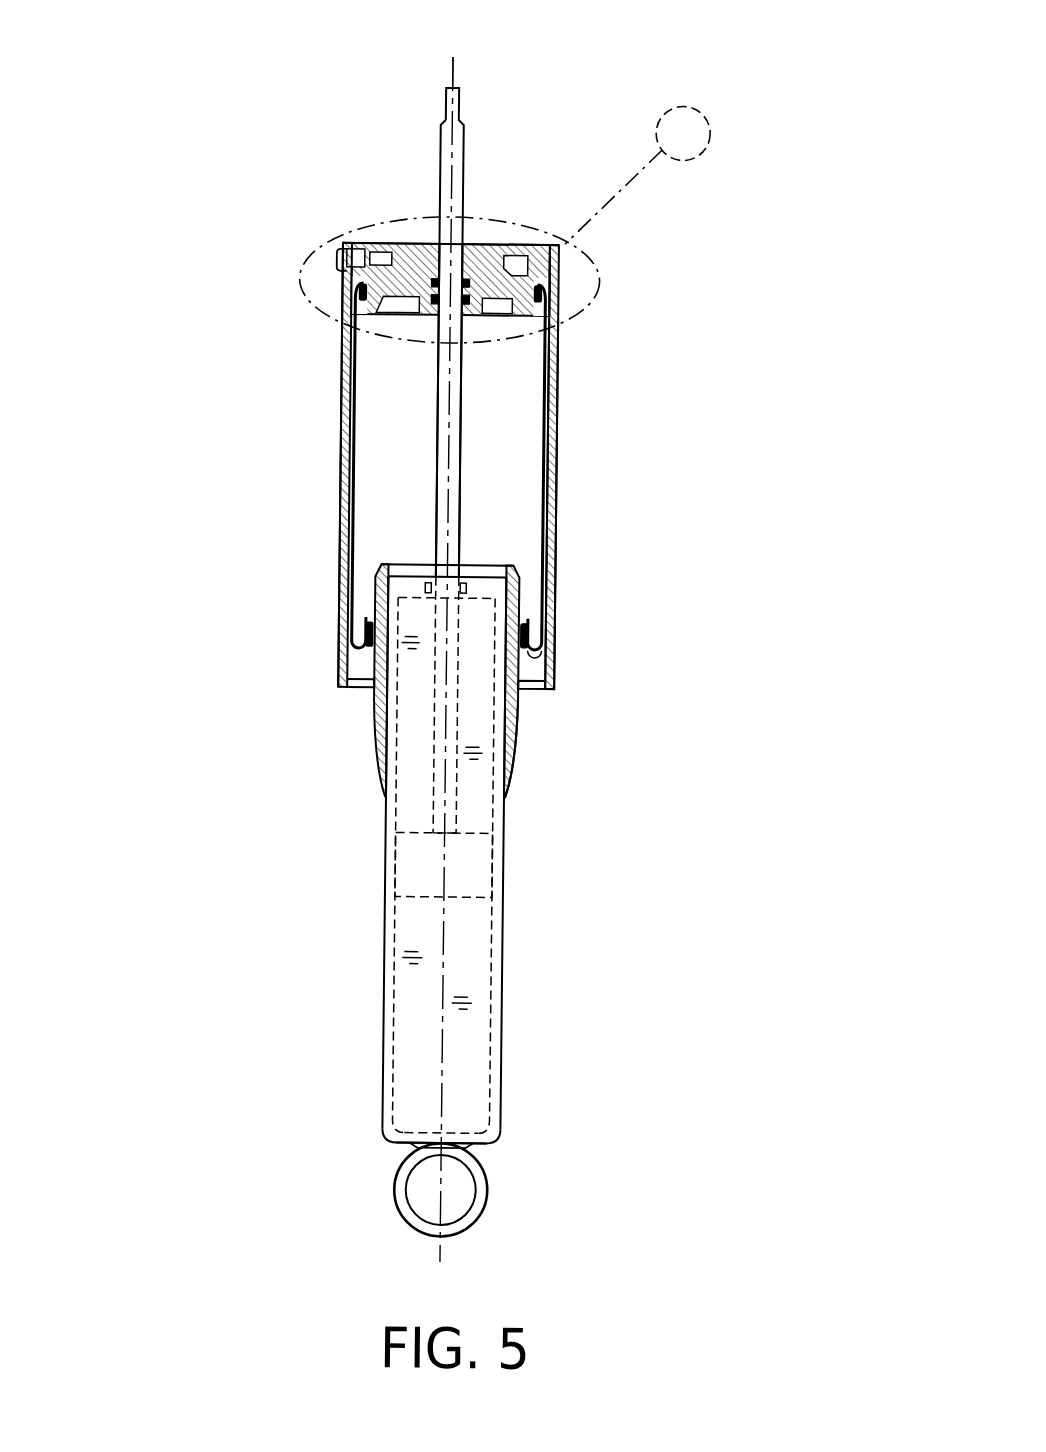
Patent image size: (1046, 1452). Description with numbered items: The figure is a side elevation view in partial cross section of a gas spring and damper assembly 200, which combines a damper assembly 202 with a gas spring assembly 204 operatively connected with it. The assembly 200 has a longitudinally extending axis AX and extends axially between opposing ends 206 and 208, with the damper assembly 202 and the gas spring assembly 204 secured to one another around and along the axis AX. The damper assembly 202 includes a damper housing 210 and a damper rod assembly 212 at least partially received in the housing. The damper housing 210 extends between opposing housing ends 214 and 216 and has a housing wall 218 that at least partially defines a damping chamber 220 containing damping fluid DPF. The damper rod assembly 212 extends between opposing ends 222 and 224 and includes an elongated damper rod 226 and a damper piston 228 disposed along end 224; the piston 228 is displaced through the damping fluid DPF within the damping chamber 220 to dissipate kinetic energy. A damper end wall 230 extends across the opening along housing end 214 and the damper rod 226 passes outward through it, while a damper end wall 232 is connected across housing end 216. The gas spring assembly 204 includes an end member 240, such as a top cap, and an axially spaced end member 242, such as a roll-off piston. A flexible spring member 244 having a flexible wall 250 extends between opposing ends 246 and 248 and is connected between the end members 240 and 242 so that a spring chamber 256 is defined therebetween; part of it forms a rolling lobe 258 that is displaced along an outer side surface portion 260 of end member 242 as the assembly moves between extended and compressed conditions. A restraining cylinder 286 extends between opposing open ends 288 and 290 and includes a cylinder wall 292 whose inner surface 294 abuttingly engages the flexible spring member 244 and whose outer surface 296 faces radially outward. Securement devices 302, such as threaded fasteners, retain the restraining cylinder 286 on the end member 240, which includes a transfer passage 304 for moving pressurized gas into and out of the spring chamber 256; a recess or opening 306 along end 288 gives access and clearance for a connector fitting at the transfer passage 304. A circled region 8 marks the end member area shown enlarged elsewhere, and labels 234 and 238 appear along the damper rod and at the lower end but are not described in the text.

The gas spring and damper assembly 200 is at (456, 673).
The damper assembly 202 is at (308, 984).
The gas spring assembly 204 is at (183, 471).
The end 206 is at (671, 303).
The end 208 is at (553, 1132).
The damper housing 210 is at (511, 997).
The damper rod assembly 212 is at (412, 532).
The housing end 214 is at (296, 608).
The housing end 216 is at (353, 1094).
The housing wall 218 is at (503, 1077).
The damping chamber 220 is at (402, 927).
The end 222 is at (488, 98).
The end 224 is at (430, 815).
The elongated damper rod 226 is at (464, 418).
The damper piston 228 is at (482, 871).
The damper end wall 230 is at (483, 592).
The damper end wall 232 is at (422, 1144).
The rod 234 is at (441, 161).
The eye mount 238 is at (433, 1237).
The end member 240 is at (393, 240).
The end member 242 is at (384, 733).
The flexible spring member 244 is at (350, 446).
The end 246 is at (367, 341).
The end 248 is at (529, 610).
The flexible wall 250 is at (557, 438).
The spring chamber 256 is at (392, 485).
The rolling lobe 258 is at (538, 664).
The outer side surface portion 260 is at (522, 762).
The restraining cylinder 286 is at (562, 349).
The open end 288 is at (333, 288).
The open end 290 is at (330, 660).
The cylinder wall 292 is at (559, 504).
The inner surface 294 is at (547, 682).
The outer surface 296 is at (561, 628).
The securement devices 302 is at (339, 259).
The transfer passage 304 is at (532, 264).
The recess or opening 306 is at (562, 281).
The detail view reference 8 is at (505, 223).
The longitudinal axis AX is at (455, 940).
The damping fluid DPF is at (490, 775).